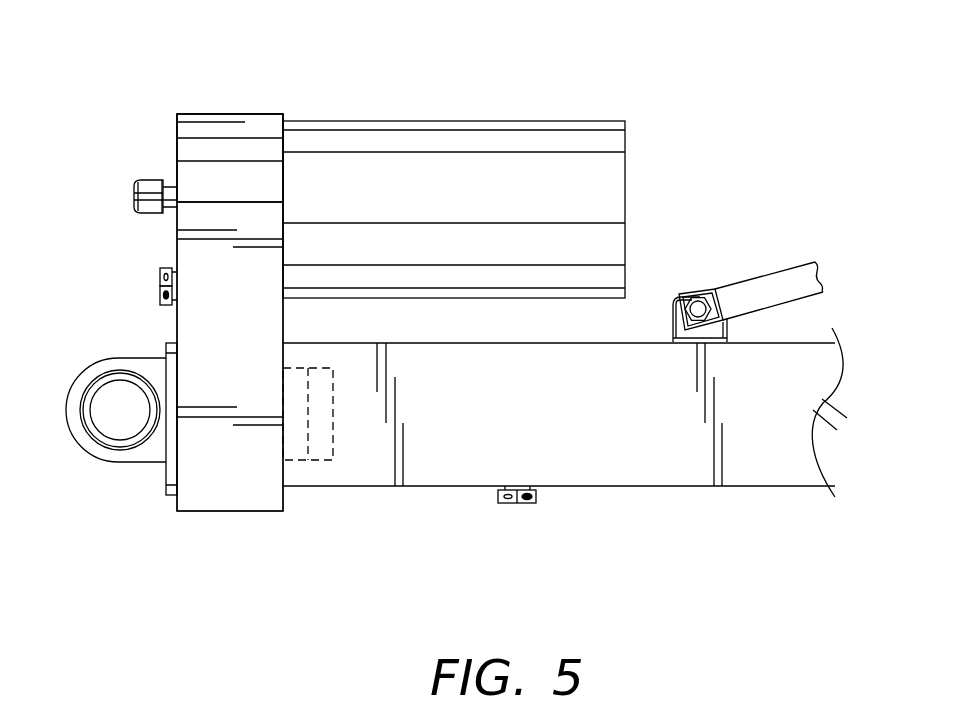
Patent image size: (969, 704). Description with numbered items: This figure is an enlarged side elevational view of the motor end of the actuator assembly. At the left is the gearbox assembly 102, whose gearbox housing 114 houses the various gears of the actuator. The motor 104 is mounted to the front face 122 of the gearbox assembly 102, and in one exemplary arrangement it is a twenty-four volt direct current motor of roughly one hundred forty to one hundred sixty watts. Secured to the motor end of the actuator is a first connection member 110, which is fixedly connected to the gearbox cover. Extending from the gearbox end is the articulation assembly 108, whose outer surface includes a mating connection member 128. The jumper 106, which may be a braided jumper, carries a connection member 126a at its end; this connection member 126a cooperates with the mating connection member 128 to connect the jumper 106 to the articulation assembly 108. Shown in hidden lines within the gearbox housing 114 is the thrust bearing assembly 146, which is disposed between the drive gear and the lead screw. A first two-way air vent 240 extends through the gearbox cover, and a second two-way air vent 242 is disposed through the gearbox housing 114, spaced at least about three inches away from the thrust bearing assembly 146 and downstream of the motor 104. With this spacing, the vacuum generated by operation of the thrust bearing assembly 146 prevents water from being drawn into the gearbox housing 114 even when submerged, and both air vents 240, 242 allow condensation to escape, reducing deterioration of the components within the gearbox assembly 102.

The gearbox assembly 102 is at (221, 98).
The motor 104 is at (470, 121).
The jumper 106 is at (800, 262).
The articulation assembly 108 is at (710, 504).
The first connection member 110 is at (145, 358).
The gearbox housing 114 is at (218, 512).
The front face 122 is at (283, 195).
The connection member 126a is at (705, 290).
The mating connection member 128 is at (672, 300).
The thrust bearing assembly 146 is at (325, 460).
The first two-way air vent 240 is at (160, 276).
The second two-way air vent 242 is at (520, 504).